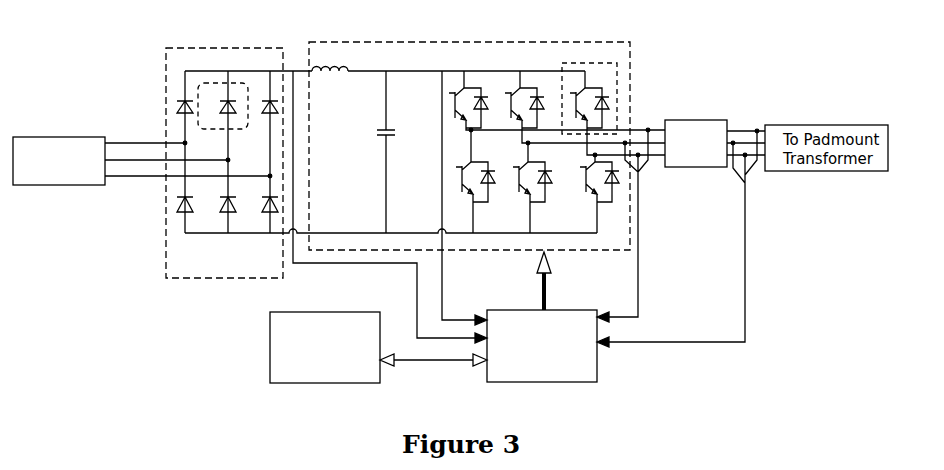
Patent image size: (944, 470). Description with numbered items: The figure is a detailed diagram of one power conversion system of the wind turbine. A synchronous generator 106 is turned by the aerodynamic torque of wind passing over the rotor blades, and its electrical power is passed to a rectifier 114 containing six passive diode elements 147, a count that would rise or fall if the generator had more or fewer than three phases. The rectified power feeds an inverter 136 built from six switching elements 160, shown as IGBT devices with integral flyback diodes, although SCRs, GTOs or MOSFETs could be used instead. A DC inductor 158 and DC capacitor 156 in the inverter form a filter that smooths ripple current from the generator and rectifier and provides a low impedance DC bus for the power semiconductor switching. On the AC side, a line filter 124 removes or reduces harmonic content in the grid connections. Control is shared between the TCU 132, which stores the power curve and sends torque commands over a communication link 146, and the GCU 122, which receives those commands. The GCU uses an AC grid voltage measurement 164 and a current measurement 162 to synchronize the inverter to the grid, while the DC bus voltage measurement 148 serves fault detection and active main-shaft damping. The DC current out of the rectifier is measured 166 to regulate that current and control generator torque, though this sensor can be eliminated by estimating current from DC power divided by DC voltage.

The generator 106 is at (59, 161).
The rectifier 114 is at (166, 243).
The diode elements 147 is at (223, 106).
The inverter 136 is at (487, 42).
The DC inductor 158 is at (327, 75).
The DC capacitor 156 is at (372, 138).
The switching elements 160 is at (589, 98).
The line filter 124 is at (696, 143).
The GCU 122 is at (543, 317).
The TCU 132 is at (325, 347).
The communication link 146 is at (430, 366).
The DC current measurement 166 is at (325, 265).
The DC bus voltage measurement 148 is at (442, 292).
The current measurement 162 is at (640, 232).
The AC grid voltage measurement 164 is at (745, 248).